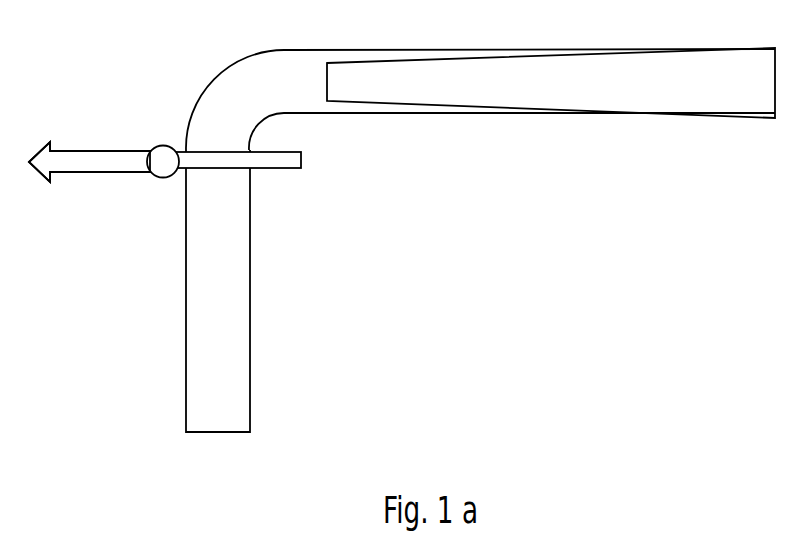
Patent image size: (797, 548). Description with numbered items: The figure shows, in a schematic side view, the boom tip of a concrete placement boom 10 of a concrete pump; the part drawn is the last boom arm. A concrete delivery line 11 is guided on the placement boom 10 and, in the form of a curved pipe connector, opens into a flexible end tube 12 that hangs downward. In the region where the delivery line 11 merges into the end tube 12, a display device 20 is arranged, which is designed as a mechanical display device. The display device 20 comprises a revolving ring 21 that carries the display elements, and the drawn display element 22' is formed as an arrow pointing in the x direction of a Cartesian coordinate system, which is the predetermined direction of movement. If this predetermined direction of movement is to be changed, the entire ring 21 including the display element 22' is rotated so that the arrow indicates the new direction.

The placement boom 10 is at (700, 100).
The concrete delivery line 11 is at (232, 83).
The end tube 12 is at (237, 282).
The display device 20 is at (109, 128).
The revolving ring 21 is at (301, 155).
The second display element 22' is at (89, 192).